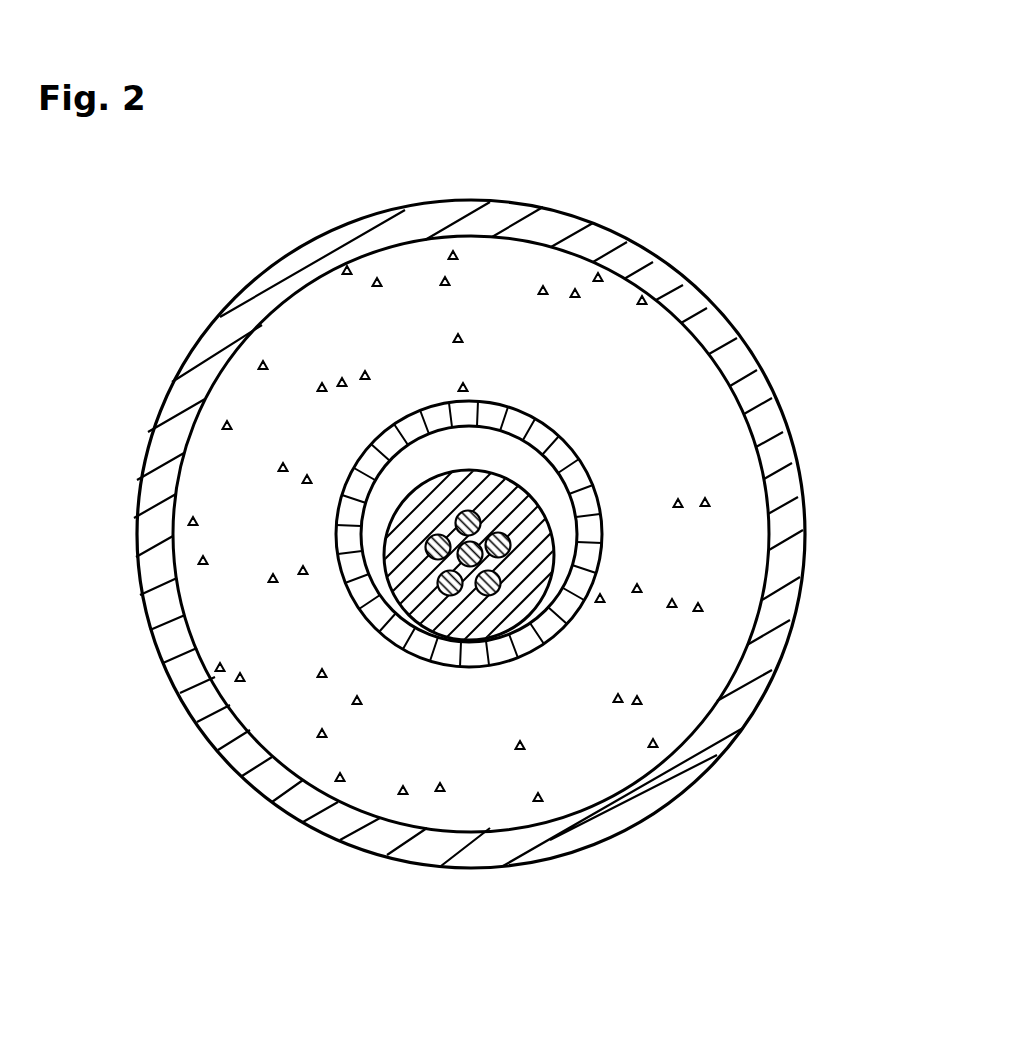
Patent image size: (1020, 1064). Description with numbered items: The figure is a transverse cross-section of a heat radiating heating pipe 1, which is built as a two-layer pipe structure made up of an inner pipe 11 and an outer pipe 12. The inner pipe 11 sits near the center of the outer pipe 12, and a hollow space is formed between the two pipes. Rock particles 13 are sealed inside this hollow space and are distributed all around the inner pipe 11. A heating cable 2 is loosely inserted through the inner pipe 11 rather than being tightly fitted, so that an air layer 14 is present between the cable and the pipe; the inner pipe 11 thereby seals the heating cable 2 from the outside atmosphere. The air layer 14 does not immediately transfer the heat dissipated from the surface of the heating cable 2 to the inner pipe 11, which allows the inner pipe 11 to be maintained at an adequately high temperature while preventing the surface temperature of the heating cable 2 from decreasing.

The heating pipe 1 is at (563, 165).
The heating cable 2 is at (517, 478).
The inner pipe 11 is at (583, 606).
The outer pipe 12 is at (803, 520).
The rock particles 13 is at (470, 803).
The air layer 14 is at (413, 463).